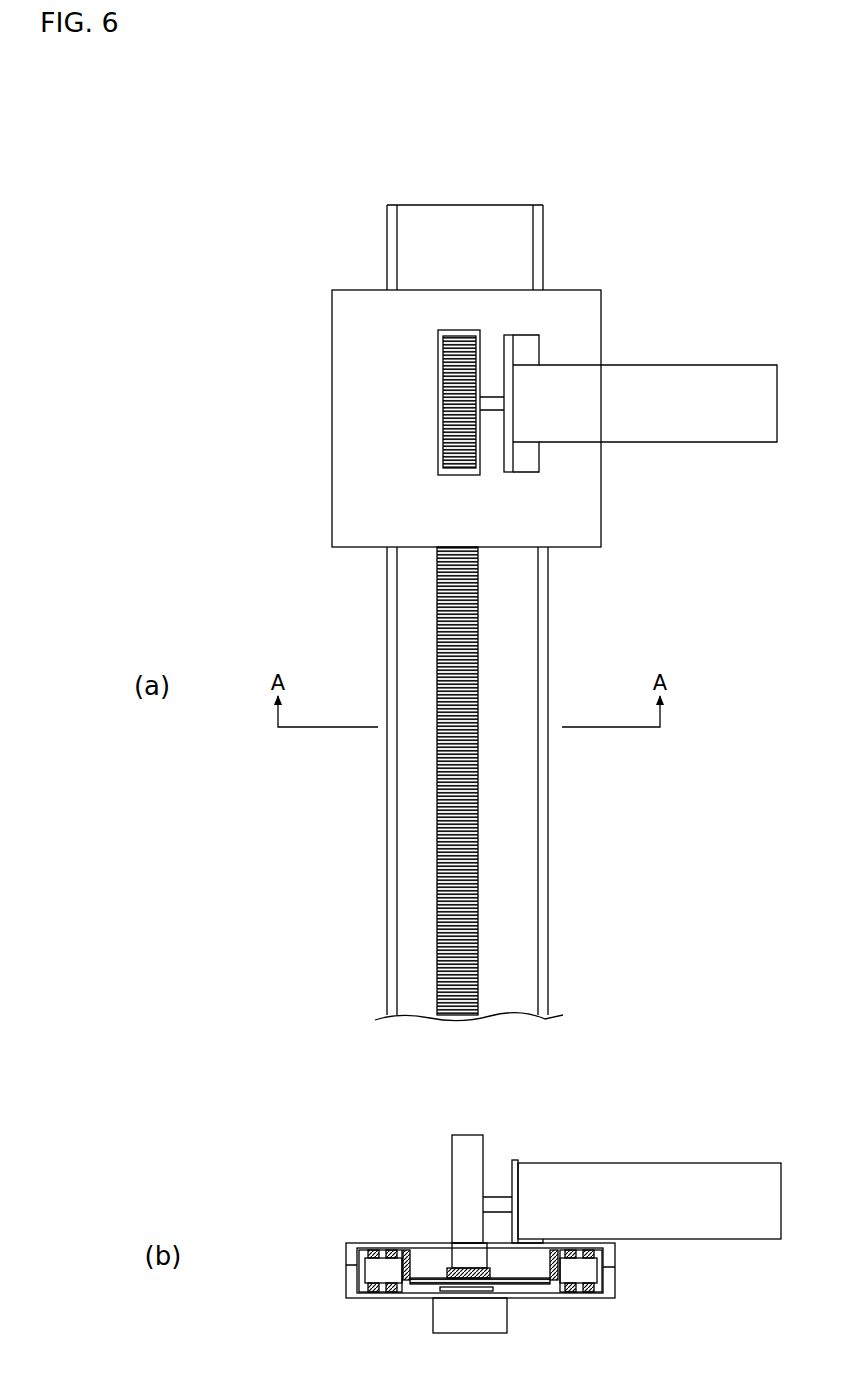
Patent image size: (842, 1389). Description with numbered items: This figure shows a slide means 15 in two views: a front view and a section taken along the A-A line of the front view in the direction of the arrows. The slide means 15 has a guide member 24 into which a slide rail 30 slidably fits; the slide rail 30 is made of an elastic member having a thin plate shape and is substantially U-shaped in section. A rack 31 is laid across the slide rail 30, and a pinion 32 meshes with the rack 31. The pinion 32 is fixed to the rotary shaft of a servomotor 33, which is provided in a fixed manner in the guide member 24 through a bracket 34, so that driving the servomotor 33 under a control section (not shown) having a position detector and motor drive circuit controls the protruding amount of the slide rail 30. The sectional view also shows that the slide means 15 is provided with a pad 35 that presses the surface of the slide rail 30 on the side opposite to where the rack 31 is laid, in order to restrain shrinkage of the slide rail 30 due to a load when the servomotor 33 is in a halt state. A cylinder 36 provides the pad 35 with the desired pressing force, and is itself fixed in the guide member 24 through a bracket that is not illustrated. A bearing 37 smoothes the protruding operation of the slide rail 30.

The slide means 15 is at (598, 241).
The guide member 24 is at (593, 312).
The slide rail 30 is at (528, 688).
The rack 31 is at (467, 637).
The pinion 32 is at (455, 375).
The servomotor 33 is at (675, 375).
The bracket 34 is at (530, 462).
The pad 35 is at (493, 1289).
The cylinder 36 is at (482, 1328).
The bearing 37 is at (377, 1282).